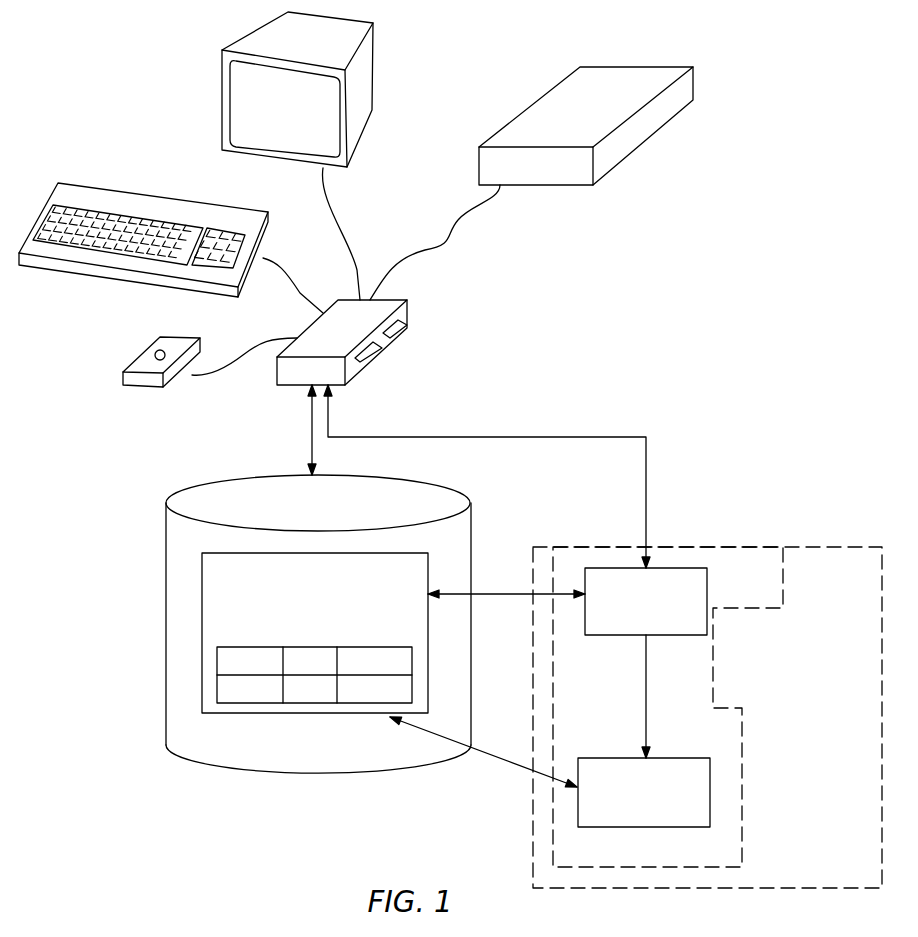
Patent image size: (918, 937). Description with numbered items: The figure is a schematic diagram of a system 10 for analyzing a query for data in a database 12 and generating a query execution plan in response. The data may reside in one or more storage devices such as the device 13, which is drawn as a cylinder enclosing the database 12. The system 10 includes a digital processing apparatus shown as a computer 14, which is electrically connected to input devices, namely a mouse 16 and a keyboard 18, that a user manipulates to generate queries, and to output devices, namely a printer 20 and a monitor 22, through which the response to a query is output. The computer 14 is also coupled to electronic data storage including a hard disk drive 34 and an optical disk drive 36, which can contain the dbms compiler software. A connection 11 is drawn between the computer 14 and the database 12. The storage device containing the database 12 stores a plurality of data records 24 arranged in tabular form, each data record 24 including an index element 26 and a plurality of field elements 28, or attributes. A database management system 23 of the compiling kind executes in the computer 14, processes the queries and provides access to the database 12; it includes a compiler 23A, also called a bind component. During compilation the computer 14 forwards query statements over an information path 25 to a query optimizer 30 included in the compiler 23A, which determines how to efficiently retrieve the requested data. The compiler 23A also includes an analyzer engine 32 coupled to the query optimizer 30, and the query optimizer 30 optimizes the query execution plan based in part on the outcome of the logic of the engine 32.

The system 10 is at (105, 525).
The bus between CPU and database 11 is at (307, 437).
The database 12 is at (453, 550).
The storage device 13 is at (165, 617).
The computer 14 is at (353, 377).
The mouse 16 is at (135, 387).
The keyboard 18 is at (107, 190).
The printer 20 is at (657, 113).
The monitor 22 is at (373, 43).
The database management system 23 is at (792, 547).
The compiler 23A is at (693, 547).
The data records 24 is at (217, 656).
The information path 25 is at (530, 437).
The index element 26 is at (260, 703).
The field elements 28 is at (342, 703).
The query optimizer 30 is at (675, 757).
The analyzer engine 32 is at (613, 637).
The hard disk drive 34 is at (405, 322).
The optical disk drive 36 is at (377, 350).